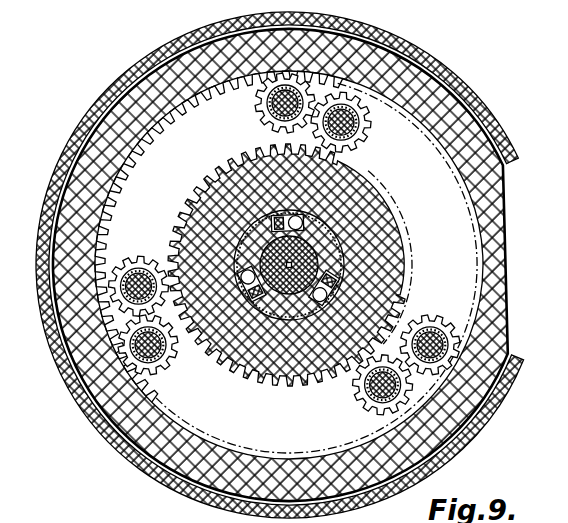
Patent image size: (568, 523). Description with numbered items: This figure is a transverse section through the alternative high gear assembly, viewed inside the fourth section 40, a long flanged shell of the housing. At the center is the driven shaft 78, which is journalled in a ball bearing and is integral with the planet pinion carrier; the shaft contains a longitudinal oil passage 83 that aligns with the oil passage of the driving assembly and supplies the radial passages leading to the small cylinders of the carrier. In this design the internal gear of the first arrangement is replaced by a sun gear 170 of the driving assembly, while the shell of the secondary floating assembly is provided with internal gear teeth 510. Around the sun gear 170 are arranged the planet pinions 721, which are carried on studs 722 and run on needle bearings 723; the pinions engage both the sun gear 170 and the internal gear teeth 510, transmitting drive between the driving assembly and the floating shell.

The fourth section 40 is at (427, 63).
The internal gear teeth 510 is at (160, 122).
The sun gear 170 is at (193, 197).
The planet pinions 721 is at (258, 110).
The studs 722 is at (266, 128).
The needle bearings 723 is at (268, 100).
The longitudinal oil passage 83 is at (288, 270).
The driven shaft 78 is at (289, 272).